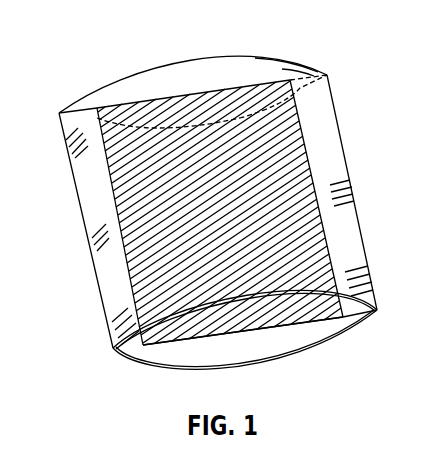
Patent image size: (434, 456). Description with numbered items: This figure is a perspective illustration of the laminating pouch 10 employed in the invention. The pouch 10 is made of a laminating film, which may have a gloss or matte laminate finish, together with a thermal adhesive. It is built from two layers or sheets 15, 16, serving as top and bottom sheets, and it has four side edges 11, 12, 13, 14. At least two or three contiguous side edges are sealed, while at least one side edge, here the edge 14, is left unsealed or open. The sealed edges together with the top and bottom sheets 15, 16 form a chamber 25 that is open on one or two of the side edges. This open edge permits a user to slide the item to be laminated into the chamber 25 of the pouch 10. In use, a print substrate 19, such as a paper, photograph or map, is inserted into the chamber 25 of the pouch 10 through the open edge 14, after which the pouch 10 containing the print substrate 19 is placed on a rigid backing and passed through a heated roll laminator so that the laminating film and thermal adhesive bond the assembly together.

The laminating pouch 10 is at (362, 48).
The side edge 11 is at (82, 217).
The side edge 12 is at (225, 67).
The side edge 13 is at (358, 215).
The side edge 14 is at (327, 328).
The sheet 15 is at (333, 153).
The sheet 16 is at (103, 270).
The print substrate 19 is at (285, 327).
The chamber 25 is at (212, 332).